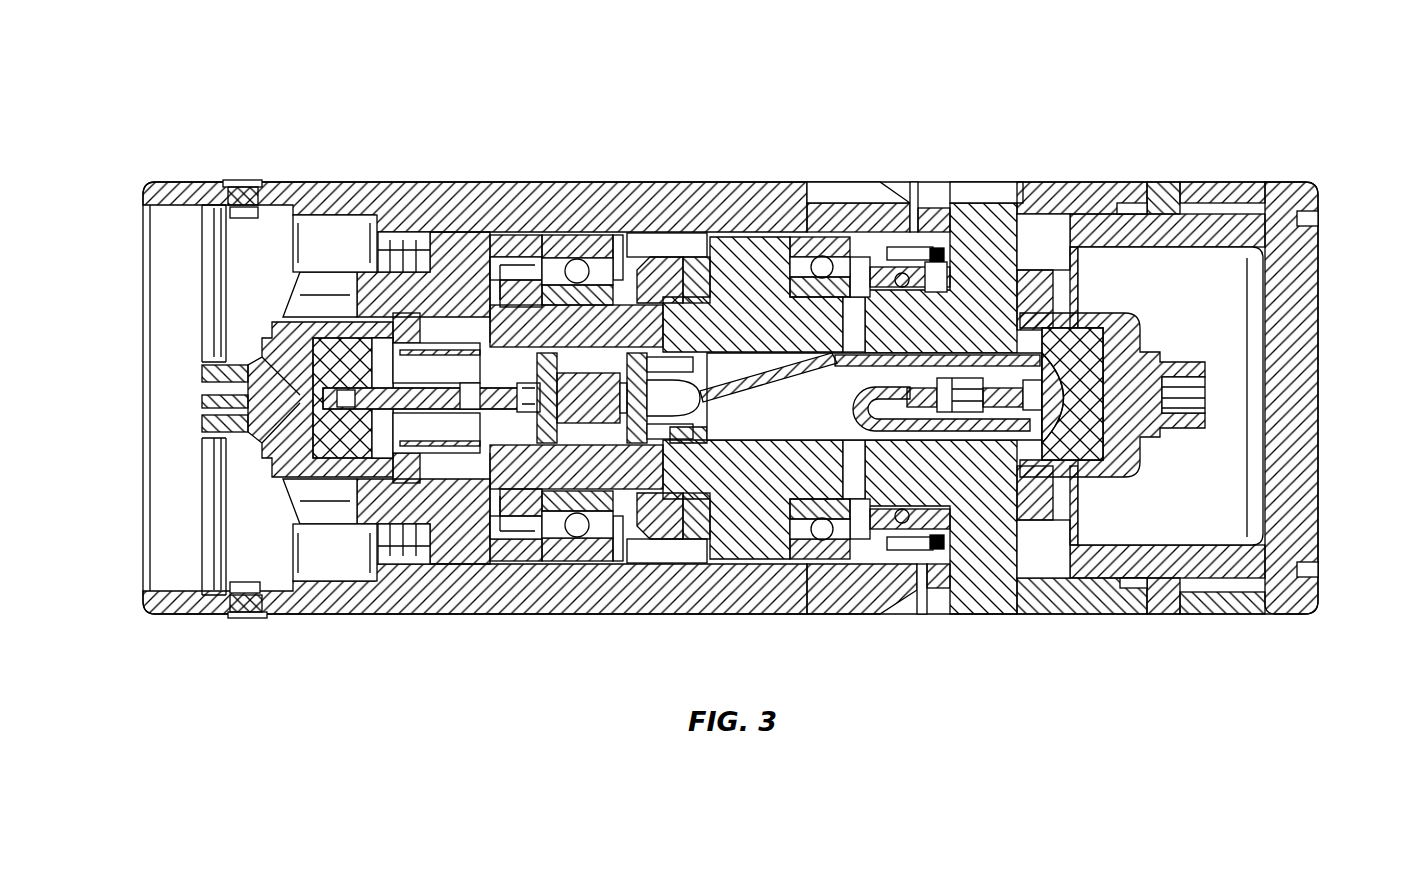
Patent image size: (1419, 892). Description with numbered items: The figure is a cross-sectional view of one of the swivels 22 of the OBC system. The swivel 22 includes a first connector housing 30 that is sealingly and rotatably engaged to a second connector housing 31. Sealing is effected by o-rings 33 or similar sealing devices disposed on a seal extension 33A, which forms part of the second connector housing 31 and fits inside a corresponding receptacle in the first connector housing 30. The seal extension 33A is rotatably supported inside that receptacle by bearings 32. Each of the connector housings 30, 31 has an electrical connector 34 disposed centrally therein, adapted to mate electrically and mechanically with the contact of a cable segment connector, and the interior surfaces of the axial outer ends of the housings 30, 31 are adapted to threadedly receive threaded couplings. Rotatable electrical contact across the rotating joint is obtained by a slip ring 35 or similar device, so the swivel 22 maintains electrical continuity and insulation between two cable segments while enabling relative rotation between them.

The swivel 22 is at (836, 80).
The first connector housing 30 is at (432, 614).
The second connector housing 31 is at (1108, 614).
The bearings 32 is at (553, 258).
The o-rings 33 is at (915, 205).
The seal extension 33A is at (963, 203).
The electrical connector 34 is at (1207, 370).
The slip ring 35 is at (667, 445).